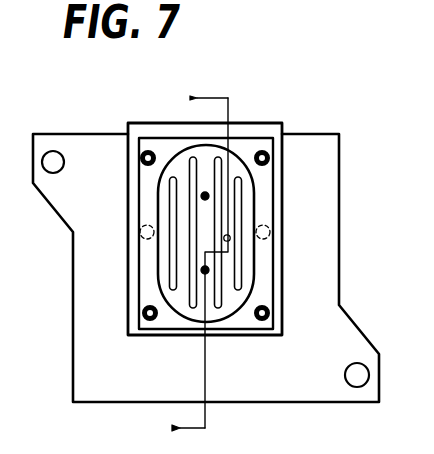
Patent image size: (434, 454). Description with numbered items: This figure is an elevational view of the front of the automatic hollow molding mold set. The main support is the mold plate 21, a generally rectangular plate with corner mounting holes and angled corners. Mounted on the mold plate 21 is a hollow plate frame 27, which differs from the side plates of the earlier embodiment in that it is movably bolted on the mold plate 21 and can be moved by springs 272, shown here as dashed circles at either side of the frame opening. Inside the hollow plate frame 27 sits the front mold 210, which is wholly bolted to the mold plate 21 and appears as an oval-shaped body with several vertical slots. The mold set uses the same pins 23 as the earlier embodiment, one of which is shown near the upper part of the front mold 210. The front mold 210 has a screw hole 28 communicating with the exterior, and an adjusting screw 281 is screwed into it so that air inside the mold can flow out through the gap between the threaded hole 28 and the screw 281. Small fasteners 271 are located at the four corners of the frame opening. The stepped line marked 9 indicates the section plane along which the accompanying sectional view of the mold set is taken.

The mold plate 21 is at (340, 217).
The hollow plate frame 27 is at (148, 269).
The front mold 210 is at (172, 213).
The fastening rivets 271 is at (143, 159).
The spring 272 is at (126, 249).
The pin 23 is at (205, 196).
The screw hole 28 is at (257, 217).
The adjusting screw 281 is at (230, 236).
The section line 9- 9 is at (188, 263).